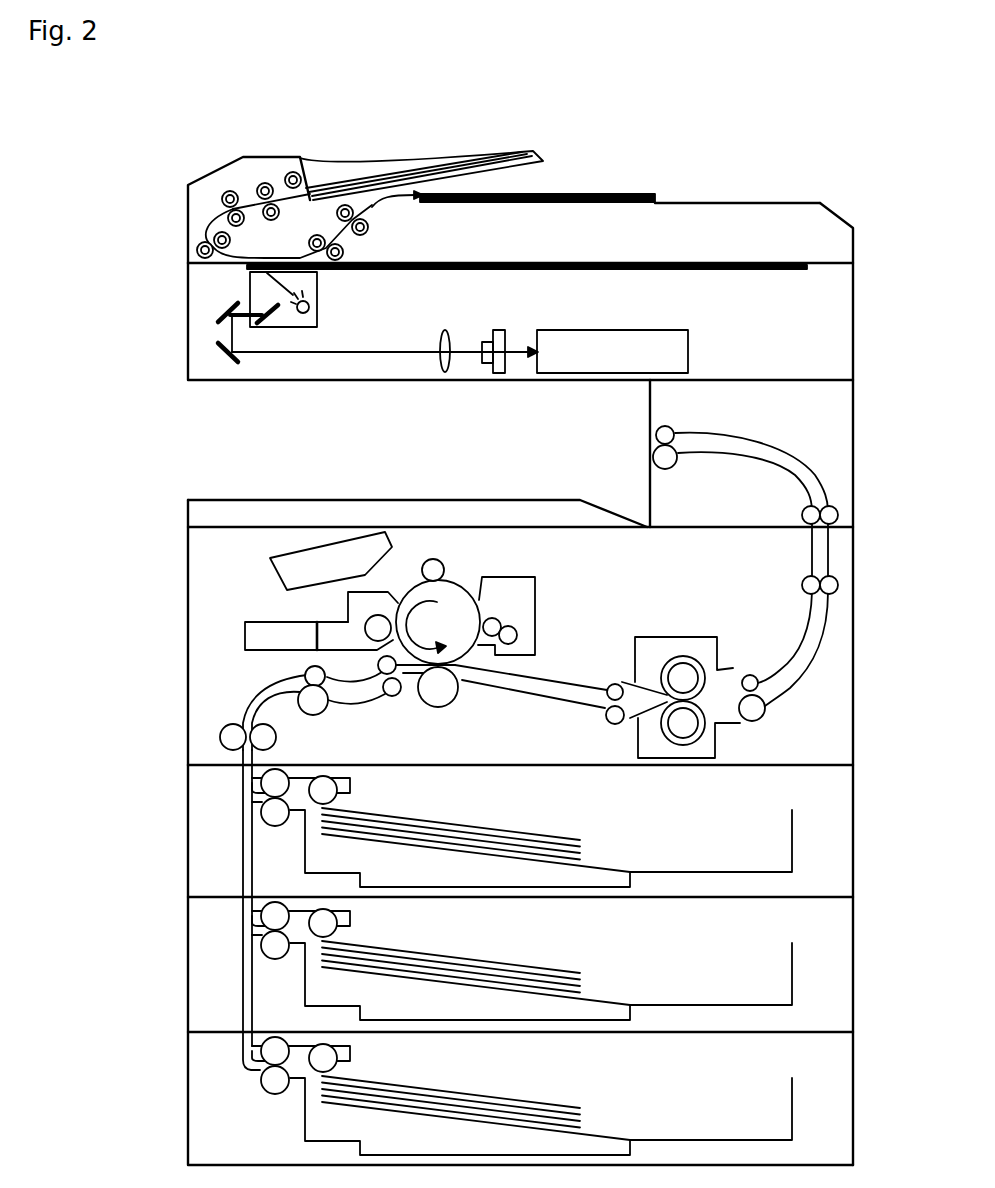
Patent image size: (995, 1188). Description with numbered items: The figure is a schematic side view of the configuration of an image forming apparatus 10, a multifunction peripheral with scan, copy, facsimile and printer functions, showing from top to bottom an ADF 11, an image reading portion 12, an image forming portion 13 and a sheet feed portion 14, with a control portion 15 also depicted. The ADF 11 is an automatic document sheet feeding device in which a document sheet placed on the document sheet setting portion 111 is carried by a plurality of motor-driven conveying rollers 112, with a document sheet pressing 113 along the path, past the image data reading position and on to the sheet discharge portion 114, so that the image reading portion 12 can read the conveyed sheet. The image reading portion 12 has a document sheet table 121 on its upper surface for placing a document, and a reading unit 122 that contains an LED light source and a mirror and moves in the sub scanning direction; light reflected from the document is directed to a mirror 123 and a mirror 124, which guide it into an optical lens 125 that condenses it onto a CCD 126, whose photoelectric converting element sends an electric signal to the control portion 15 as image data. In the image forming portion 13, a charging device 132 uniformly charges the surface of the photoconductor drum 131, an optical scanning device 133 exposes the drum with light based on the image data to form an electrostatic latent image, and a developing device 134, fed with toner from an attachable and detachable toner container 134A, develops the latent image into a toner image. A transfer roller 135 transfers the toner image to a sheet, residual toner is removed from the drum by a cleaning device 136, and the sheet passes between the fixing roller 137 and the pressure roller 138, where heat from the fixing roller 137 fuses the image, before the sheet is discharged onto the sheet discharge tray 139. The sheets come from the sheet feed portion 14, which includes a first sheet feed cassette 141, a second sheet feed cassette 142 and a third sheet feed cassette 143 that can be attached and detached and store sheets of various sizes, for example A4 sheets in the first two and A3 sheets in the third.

The image forming apparatus 10 is at (141, 178).
The ADF 11 is at (188, 205).
The image reading portion 12 is at (188, 338).
The image forming portion 13 is at (188, 572).
The sheet feed portion 14 is at (188, 840).
The control portion 15 is at (602, 330).
The document sheet setting portion 111 is at (358, 165).
The conveying rollers 112 is at (230, 191).
The document sheet pressing 113 is at (262, 257).
The sheet discharge portion 114 is at (675, 203).
The document sheet table 121 is at (663, 270).
The reading unit 122 is at (317, 313).
The mirror 123 is at (222, 305).
The mirror 124 is at (230, 360).
The optical lens 125 is at (446, 331).
The CCD 126 is at (505, 331).
The photoconductor drum 131 is at (471, 588).
The charging device 132 is at (422, 577).
The optical scanning device 133 is at (270, 577).
The developing device 134 is at (348, 603).
The toner container 134A is at (263, 650).
The transfer roller 135 is at (447, 707).
The cleaning device 136 is at (510, 577).
The fixing roller 137 is at (703, 661).
The pressure roller 138 is at (668, 737).
The sheet discharge tray 139 is at (558, 500).
The first sheet feed cassette 141 is at (707, 872).
The second sheet feed cassette 142 is at (707, 1005).
The third sheet feed cassette 143 is at (707, 1140).